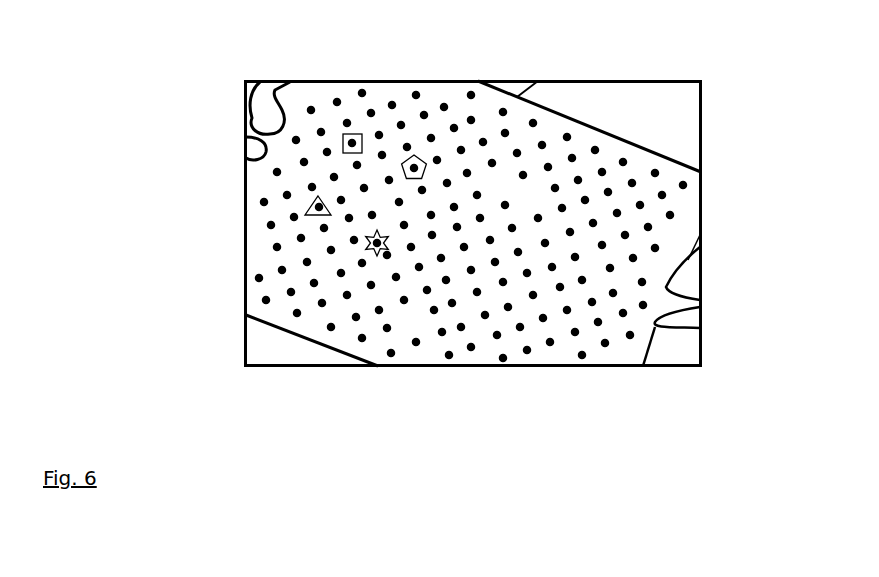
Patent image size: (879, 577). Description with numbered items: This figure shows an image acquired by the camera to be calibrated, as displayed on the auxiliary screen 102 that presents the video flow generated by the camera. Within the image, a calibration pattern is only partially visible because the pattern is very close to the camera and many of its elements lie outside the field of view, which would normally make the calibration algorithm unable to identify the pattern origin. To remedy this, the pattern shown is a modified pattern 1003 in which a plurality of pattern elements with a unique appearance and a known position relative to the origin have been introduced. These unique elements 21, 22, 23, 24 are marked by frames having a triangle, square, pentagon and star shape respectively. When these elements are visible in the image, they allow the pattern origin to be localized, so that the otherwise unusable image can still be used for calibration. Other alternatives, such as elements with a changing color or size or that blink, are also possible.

The auxiliary screen 102 is at (702, 105).
The modified pattern 1003 is at (258, 208).
The unique pattern element 22 is at (357, 134).
The unique pattern element 23 is at (417, 155).
The unique pattern element 21 is at (305, 208).
The unique pattern element 24 is at (365, 240).